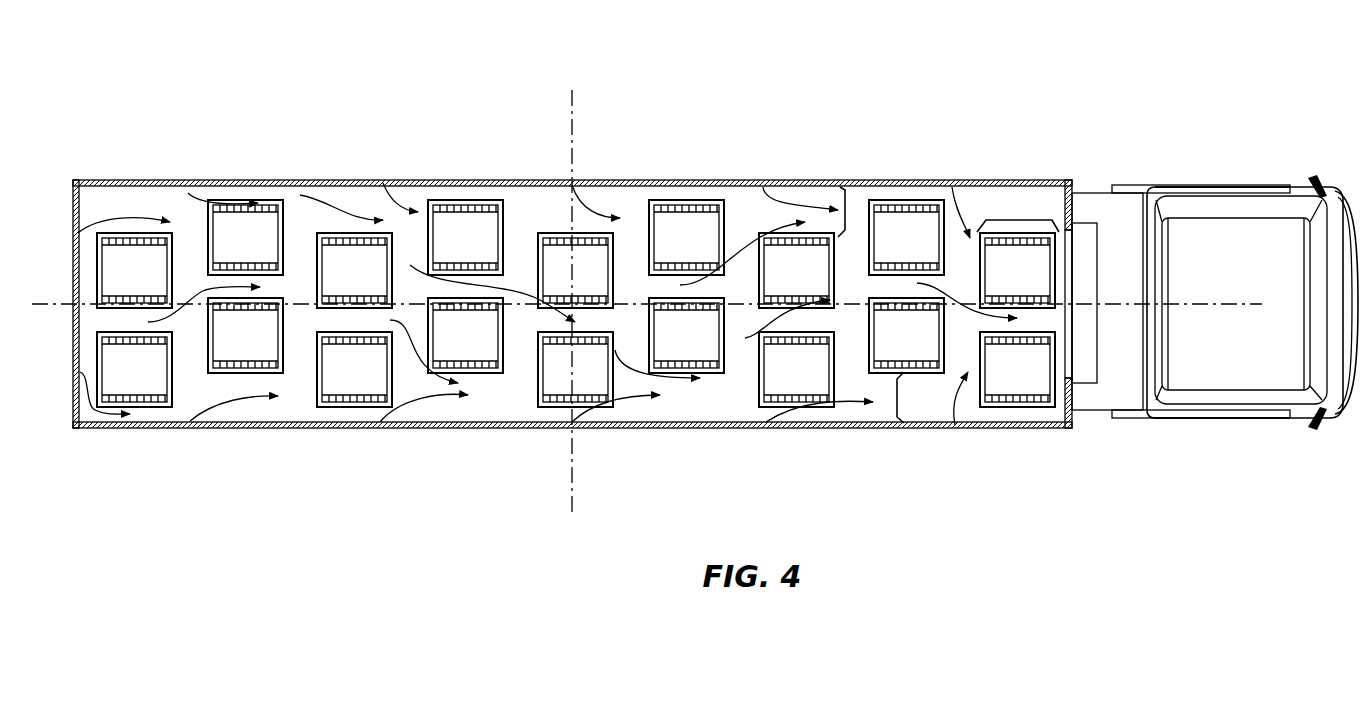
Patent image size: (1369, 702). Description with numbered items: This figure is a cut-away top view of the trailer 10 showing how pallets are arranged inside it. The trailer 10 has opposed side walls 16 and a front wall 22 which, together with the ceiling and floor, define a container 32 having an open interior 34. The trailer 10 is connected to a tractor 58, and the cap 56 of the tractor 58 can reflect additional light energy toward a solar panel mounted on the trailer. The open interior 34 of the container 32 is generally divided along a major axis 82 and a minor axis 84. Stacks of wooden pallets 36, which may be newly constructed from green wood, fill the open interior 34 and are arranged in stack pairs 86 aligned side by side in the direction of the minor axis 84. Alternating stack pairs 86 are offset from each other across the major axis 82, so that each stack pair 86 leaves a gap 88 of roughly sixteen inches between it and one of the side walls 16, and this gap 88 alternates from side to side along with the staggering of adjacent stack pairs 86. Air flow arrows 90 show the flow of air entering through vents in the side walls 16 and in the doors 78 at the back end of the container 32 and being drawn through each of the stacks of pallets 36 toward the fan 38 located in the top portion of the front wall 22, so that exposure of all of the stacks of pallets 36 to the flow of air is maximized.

The trailer 10 is at (1142, 96).
The side walls 16 is at (311, 178).
The front wall 22 is at (1078, 420).
The container 32 is at (146, 145).
The open interior 34 is at (487, 411).
The stacks of wooden pallets 36 is at (1013, 388).
The fan 38 is at (1102, 240).
The cap 56 is at (1127, 245).
The tractor 58 is at (1224, 375).
The doors 78 is at (72, 282).
The major axis 82 is at (1196, 305).
The minor axis 84 is at (572, 470).
The stack pairs 86 is at (1020, 220).
The gap 88 is at (855, 200).
The air flow arrows 90 is at (116, 218).